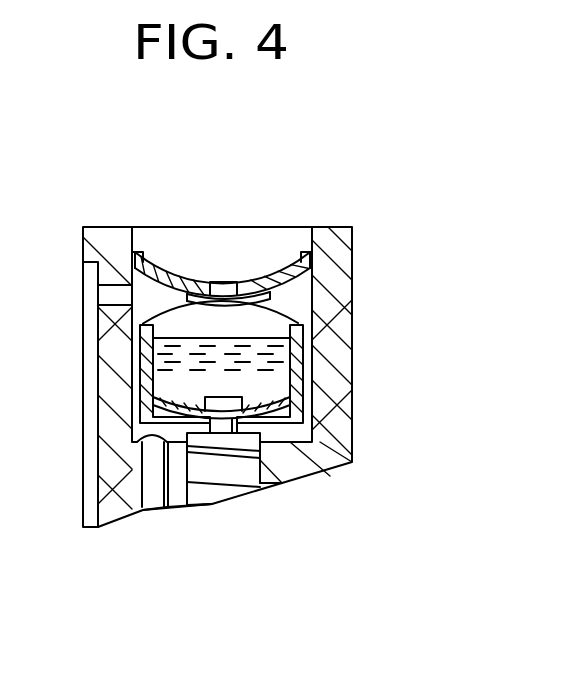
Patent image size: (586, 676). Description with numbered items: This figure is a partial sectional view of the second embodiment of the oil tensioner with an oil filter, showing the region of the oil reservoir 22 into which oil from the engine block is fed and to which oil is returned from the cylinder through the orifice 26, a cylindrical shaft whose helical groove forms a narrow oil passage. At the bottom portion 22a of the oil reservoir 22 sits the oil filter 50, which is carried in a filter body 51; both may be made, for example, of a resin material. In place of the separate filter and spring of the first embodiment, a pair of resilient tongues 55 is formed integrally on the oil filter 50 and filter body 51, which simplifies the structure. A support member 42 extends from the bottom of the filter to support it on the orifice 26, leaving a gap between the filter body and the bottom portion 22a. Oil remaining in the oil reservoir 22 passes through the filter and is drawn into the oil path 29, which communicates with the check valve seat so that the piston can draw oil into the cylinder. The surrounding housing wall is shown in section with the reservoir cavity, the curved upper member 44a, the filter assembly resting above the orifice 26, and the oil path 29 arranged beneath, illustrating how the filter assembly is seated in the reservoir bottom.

The oil reservoir 22 is at (304, 243).
The bottom portion of oil reservoir 22a is at (130, 446).
The dish-shaped portion 44a is at (166, 275).
The resilient tongues 55 is at (304, 318).
The filter body 51 is at (291, 372).
The oil filter 50 is at (272, 404).
The support member 42 is at (303, 442).
The oil path 29 is at (149, 492).
The orifice 26 is at (207, 497).